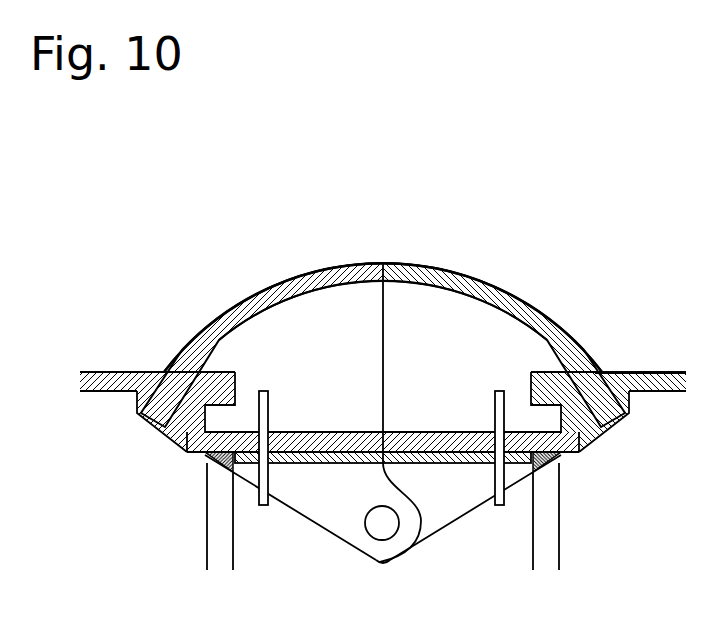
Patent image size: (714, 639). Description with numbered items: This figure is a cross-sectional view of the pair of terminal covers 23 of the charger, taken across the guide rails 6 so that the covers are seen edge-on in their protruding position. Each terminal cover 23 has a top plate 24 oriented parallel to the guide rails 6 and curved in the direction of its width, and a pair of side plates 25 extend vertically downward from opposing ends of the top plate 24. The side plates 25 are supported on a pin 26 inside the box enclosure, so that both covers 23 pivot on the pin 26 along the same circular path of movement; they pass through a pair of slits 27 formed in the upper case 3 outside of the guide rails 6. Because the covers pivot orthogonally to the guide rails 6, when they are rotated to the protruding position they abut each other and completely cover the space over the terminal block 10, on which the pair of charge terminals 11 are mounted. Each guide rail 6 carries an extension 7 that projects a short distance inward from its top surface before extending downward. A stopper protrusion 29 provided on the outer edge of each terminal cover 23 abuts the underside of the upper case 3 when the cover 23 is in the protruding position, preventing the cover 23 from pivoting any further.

The upper case 3 is at (652, 374).
The guide rails 6 is at (203, 366).
The extension 7 is at (203, 450).
The terminal block 10 is at (447, 465).
The charge terminals 11 is at (266, 390).
The terminal covers 23 is at (318, 271).
The top plate 24 is at (265, 299).
The side plates 25 is at (253, 345).
The pin 26 is at (382, 532).
The slits 27 is at (160, 382).
The stopper protrusion 29 is at (135, 406).